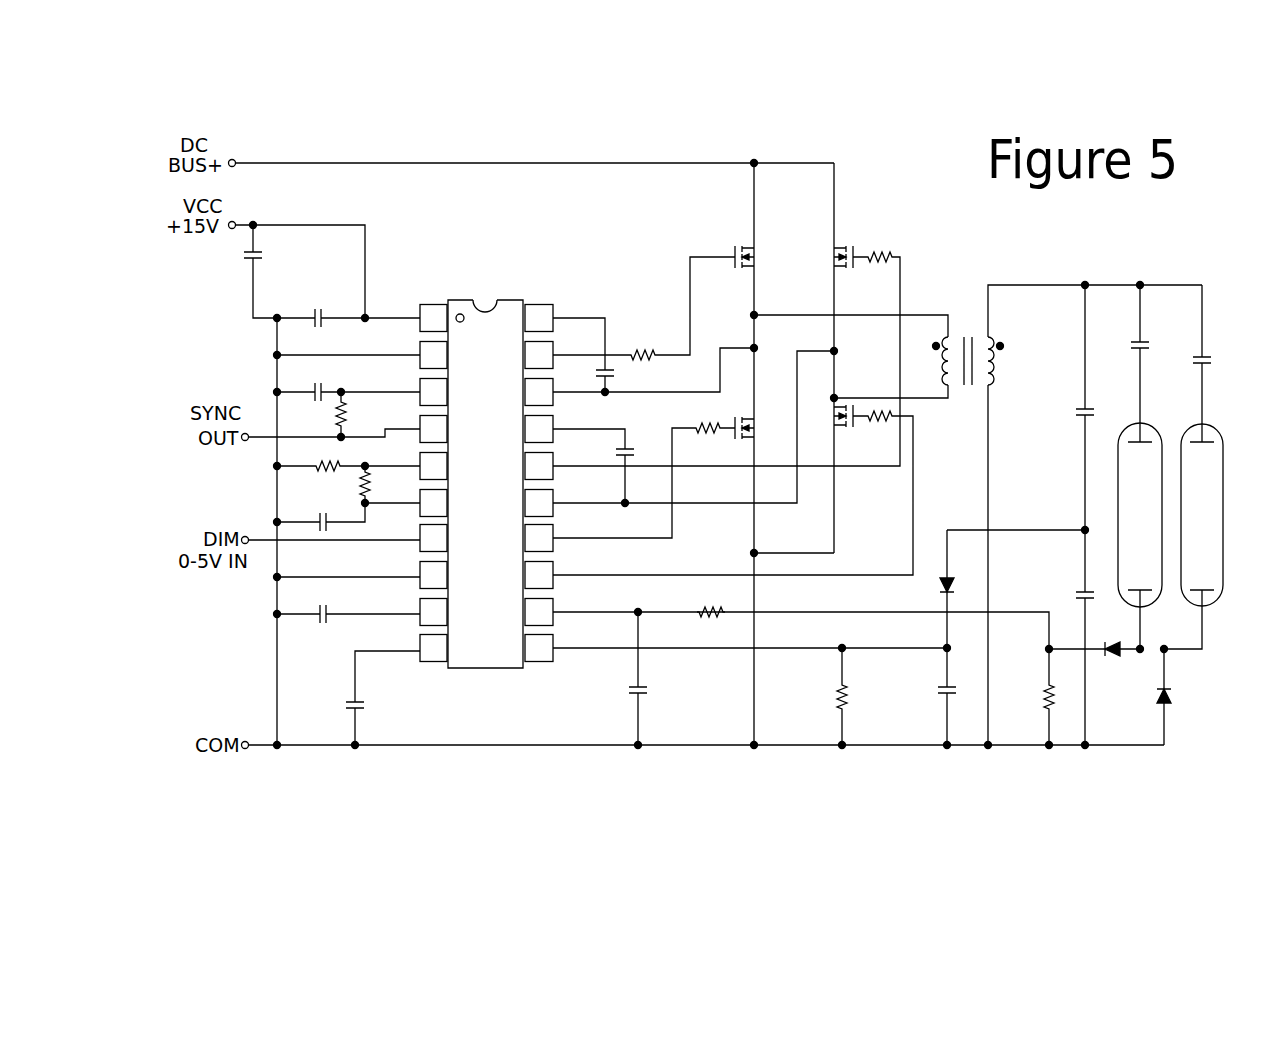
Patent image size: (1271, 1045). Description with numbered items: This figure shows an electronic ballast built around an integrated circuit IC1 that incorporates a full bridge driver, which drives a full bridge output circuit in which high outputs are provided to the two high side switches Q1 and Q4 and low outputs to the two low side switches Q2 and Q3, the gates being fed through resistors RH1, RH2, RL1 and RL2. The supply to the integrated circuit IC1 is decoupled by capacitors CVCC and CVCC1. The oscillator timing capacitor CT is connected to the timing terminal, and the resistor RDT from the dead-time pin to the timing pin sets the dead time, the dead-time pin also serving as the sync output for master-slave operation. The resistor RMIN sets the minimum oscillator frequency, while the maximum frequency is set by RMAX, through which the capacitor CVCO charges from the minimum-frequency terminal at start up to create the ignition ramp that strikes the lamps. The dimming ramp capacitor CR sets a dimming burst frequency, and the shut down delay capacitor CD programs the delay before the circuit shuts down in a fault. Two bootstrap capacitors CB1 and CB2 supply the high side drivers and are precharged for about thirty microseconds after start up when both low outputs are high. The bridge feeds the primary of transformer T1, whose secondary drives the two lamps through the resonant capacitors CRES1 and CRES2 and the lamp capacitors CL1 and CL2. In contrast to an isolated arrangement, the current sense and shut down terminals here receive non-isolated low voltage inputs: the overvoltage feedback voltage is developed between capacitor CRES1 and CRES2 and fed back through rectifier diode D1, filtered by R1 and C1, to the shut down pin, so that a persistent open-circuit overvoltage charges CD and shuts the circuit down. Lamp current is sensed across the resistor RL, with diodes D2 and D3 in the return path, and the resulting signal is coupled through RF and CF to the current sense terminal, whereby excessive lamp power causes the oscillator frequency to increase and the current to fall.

The integrated circuit IC1 is at (478, 471).
The VCC capacitor CVCC is at (282, 256).
The VCC decoupling capacitor CVCC1 is at (320, 303).
The oscillator timing capacitor CT is at (316, 380).
The dead time resistor RDT is at (363, 414).
The minimum frequency resistor RMIN is at (349, 456).
The maximum frequency resistor RMAX is at (337, 485).
The VCO capacitor CVCO is at (329, 544).
The dimming ramp capacitor CR is at (325, 602).
The shut down delay capacitor CD is at (337, 706).
The bootstrap capacitor CB1 is at (627, 373).
The high side gate resistor RH1 is at (647, 343).
The bootstrap capacitor CB2 is at (643, 442).
The low side gate resistor RL1 is at (703, 416).
The high side switch Q1 is at (753, 257).
The high side switch Q4 is at (835, 257).
The high side gate resistor RH2 is at (880, 243).
The low side switch Q2 is at (753, 429).
The low side switch Q3 is at (835, 416).
The low side gate resistor RL2 is at (879, 429).
The transformer T1 is at (968, 340).
The resonant capacitor CRES1 is at (1057, 401).
The lamp capacitor CL1 is at (1126, 334).
The lamp capacitor CL2 is at (1187, 368).
The resonant capacitor CRES2 is at (1057, 585).
The rectifier diode D1 is at (963, 586).
The feedback resistor RF is at (711, 599).
The feedback capacitor CF is at (653, 690).
The filter resistor R1 is at (857, 695).
The filter capacitor C1 is at (958, 698).
The current sense resistor RL is at (1060, 703).
The diode D2 is at (1116, 666).
The diode D3 is at (1182, 695).